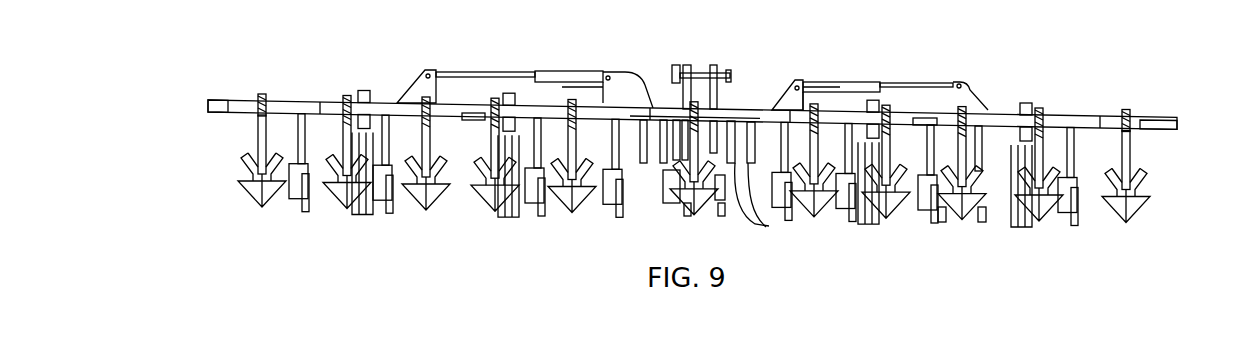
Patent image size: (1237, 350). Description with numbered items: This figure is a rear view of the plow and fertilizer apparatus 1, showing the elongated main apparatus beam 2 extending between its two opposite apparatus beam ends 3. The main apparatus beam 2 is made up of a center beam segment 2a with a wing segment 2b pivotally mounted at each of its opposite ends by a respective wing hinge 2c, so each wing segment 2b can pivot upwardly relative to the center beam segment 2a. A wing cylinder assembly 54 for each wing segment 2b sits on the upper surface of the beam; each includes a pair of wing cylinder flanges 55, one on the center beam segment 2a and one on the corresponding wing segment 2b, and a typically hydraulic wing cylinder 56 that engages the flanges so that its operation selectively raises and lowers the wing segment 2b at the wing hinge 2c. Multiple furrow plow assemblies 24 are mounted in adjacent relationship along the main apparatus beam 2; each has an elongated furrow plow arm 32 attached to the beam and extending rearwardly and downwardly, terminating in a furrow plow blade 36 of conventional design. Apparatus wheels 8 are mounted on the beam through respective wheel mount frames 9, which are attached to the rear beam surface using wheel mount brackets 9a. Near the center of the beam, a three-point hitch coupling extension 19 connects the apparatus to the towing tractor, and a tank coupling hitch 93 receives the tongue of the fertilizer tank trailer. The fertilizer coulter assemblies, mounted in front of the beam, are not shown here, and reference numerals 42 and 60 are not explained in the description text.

The plow and fertilizer apparatus 1 is at (254, 19).
The main apparatus beam 2 is at (234, 95).
The center beam segment 2a is at (743, 104).
The wing segment 2b is at (284, 96).
The wing hinge 2c is at (481, 118).
The apparatus beam end 3 is at (207, 107).
The apparatus wheel 8 is at (368, 215).
The wheel mount frame 9 is at (365, 128).
The wheel mount bracket 9a is at (362, 88).
The three-point hitch coupling extension 19 is at (722, 65).
The furrow plow assembly 24 is at (239, 214).
The furrow plow arm 32 is at (252, 138).
The furrow plow blade 36 is at (240, 190).
The clamp 42 is at (262, 93).
The wing cylinder assembly 54 is at (509, 61).
The wing cylinder flange 55 is at (404, 95).
The wing cylinder 56 is at (480, 75).
The depth gauge 60 is at (297, 219).
The tank coupling hitch 93 is at (765, 241).